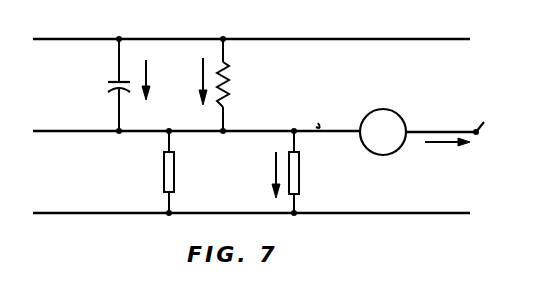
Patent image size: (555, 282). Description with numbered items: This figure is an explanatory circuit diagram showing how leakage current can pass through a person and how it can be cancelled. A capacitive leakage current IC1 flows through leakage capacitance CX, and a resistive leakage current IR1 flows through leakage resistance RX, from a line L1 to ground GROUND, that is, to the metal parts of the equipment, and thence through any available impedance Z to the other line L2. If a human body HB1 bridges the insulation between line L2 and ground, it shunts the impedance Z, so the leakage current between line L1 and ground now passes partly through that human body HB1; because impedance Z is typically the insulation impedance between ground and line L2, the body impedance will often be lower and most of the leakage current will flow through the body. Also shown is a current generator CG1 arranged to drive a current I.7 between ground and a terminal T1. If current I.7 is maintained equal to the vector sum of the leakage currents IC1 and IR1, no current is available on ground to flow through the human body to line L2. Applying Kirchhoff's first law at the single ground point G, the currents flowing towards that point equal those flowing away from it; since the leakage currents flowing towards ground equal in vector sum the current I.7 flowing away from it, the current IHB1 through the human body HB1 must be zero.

The line L1 is at (257, 39).
The other line L2 is at (226, 213).
The ground GROUND is at (254, 125).
The leakage capacitance CX is at (108, 82).
The capacitive leakage current IC1 is at (149, 80).
The resistive leakage current IR1 is at (200, 83).
The leakage resistance RX is at (231, 85).
The ground point G is at (313, 118).
The impedance Z is at (163, 168).
The current through the human body IHB1 is at (274, 160).
The human body HB1 is at (300, 173).
The current generator CG1 is at (389, 111).
The terminal T1 is at (454, 123).
The current I.7 is at (433, 146).